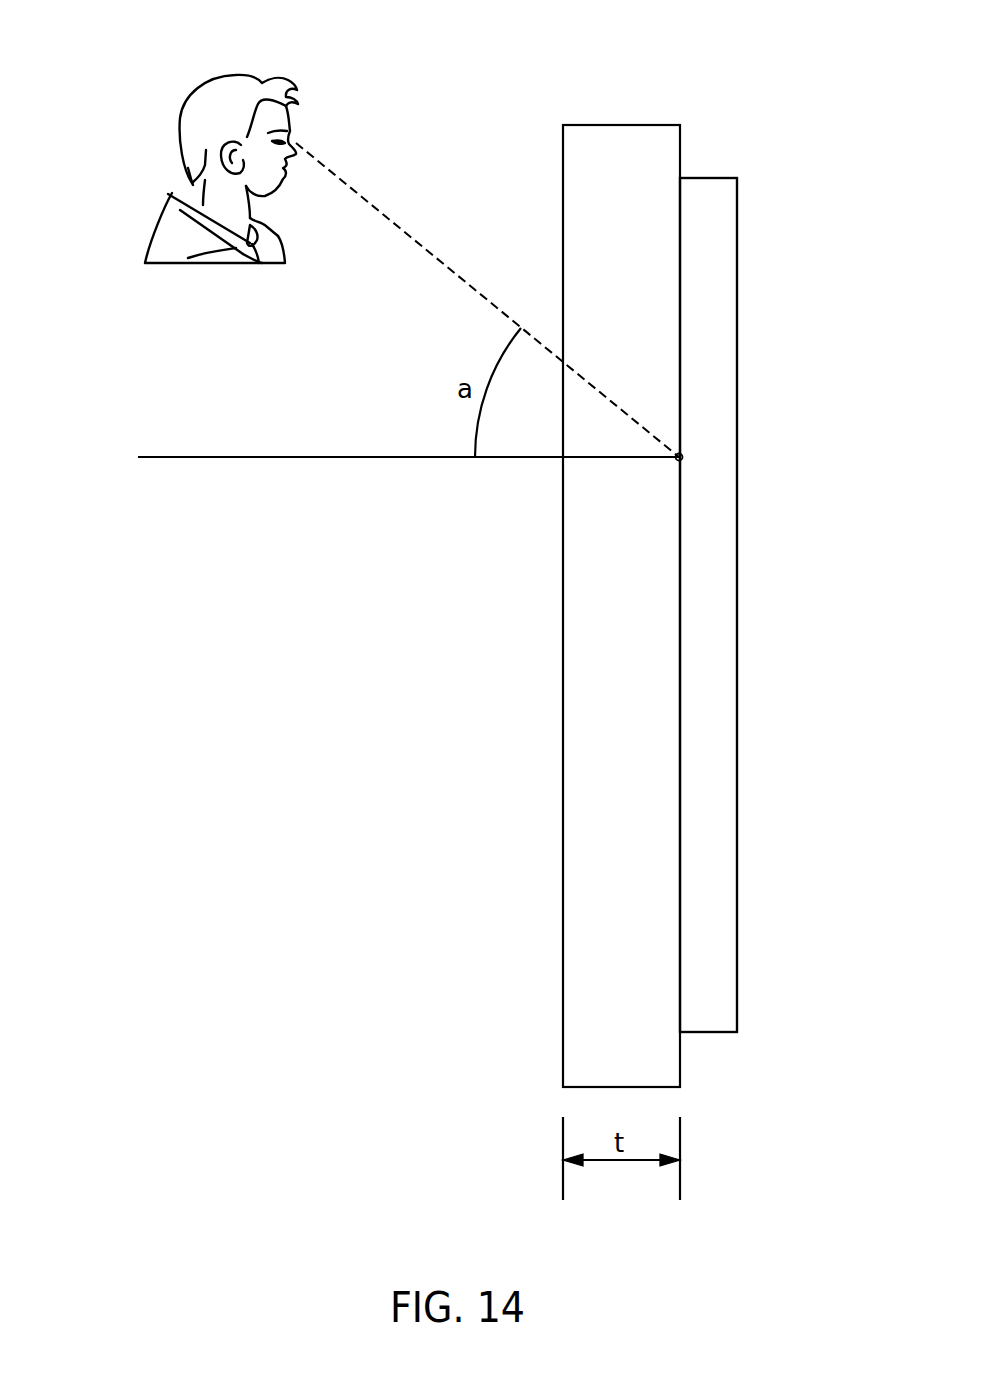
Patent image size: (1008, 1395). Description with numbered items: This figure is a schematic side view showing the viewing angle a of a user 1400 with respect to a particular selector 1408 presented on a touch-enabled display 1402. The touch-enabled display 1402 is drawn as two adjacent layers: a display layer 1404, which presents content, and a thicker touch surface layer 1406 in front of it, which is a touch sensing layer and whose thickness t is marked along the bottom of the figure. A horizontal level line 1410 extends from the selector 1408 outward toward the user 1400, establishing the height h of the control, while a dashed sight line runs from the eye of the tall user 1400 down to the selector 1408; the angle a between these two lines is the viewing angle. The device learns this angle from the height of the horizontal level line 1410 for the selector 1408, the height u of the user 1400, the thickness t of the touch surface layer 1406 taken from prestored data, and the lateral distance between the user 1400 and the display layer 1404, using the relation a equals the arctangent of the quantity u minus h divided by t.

The user 1400 is at (182, 104).
The touch-enabled display 1402 is at (737, 968).
The display layer 1404 is at (737, 297).
The touch surface layer 1406 is at (621, 112).
The selector 1408 is at (684, 460).
The horizontal level line 1410 is at (180, 457).